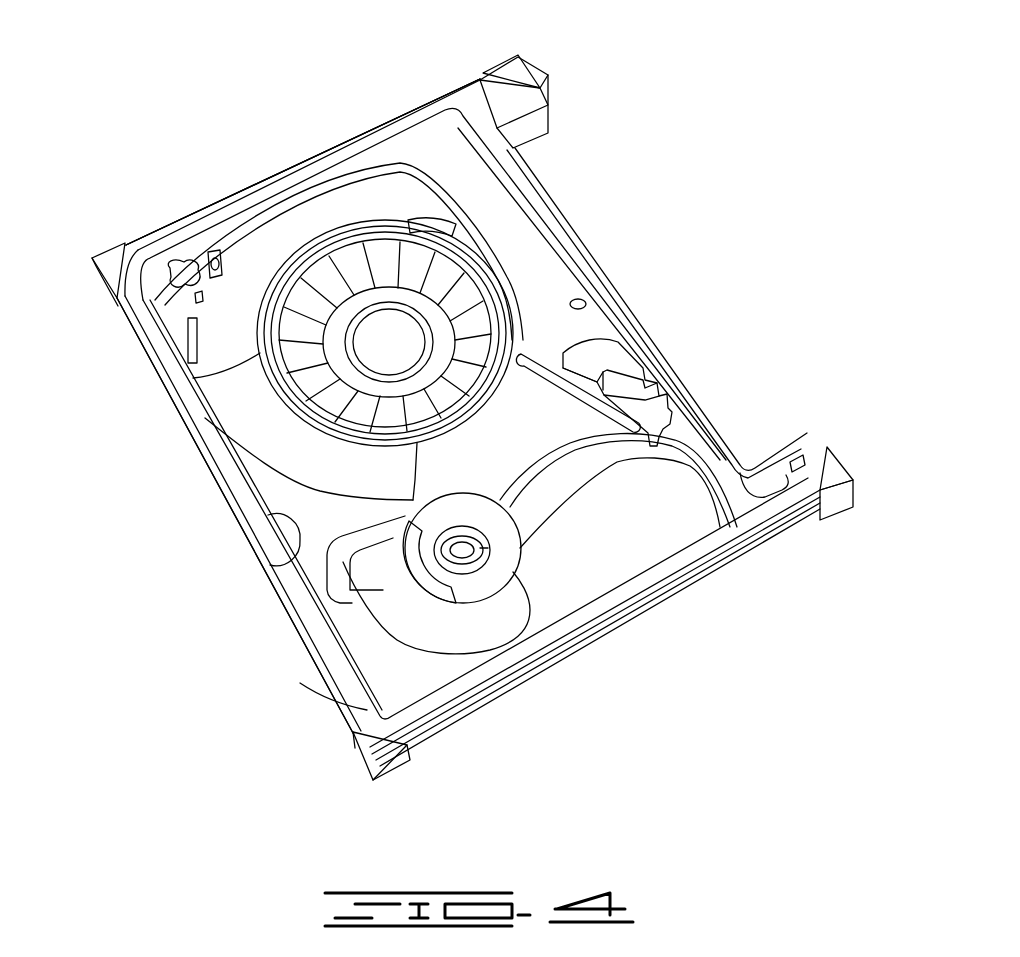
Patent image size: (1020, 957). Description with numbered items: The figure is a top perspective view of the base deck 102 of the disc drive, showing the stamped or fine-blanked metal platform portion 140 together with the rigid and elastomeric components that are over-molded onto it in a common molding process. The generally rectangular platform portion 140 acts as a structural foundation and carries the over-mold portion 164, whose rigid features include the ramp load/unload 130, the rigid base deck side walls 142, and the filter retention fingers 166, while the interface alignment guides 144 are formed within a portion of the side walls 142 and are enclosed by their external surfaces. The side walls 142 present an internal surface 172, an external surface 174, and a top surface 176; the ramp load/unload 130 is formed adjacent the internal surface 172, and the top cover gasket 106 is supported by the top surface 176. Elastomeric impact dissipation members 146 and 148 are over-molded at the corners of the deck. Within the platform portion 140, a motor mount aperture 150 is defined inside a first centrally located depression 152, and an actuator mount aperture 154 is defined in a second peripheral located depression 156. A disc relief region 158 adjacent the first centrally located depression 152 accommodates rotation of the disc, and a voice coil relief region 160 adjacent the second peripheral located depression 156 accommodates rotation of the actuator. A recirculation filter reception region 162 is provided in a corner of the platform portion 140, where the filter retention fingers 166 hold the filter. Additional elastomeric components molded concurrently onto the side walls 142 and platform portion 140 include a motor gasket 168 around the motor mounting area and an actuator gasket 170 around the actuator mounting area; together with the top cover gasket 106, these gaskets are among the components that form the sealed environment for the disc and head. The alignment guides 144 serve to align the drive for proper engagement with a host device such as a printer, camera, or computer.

The base deck 102 is at (333, 70).
The top cover gasket 106 is at (150, 336).
The ramp load/unload 130 is at (600, 350).
The platform portion 140 is at (426, 146).
The side walls 142 is at (264, 575).
The interface alignment guides 144 is at (712, 580).
The impact dissipation member 146 is at (518, 68).
The impact dissipation member 148 is at (105, 254).
The motor mount aperture 150 is at (390, 340).
The first centrally located depression 152 is at (190, 387).
The actuator mount aperture 154 is at (443, 553).
The second peripheral located depression 156 is at (505, 625).
The disc relief region 158 is at (262, 430).
The voice coil relief region 160 is at (360, 640).
The recirculation filter reception region 162 is at (183, 258).
The over-mold portion 164 is at (540, 148).
The filter retention fingers 166 is at (214, 248).
The motor gasket 168 is at (487, 288).
The actuator gasket 170 is at (520, 552).
The internal surface 172 is at (252, 518).
The external surface 174 is at (470, 714).
The top surface 176 is at (512, 100).